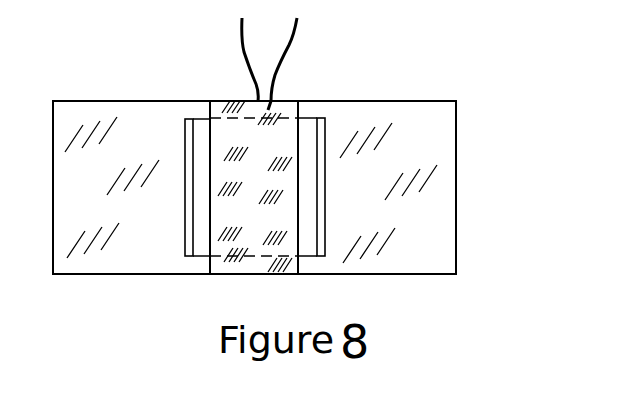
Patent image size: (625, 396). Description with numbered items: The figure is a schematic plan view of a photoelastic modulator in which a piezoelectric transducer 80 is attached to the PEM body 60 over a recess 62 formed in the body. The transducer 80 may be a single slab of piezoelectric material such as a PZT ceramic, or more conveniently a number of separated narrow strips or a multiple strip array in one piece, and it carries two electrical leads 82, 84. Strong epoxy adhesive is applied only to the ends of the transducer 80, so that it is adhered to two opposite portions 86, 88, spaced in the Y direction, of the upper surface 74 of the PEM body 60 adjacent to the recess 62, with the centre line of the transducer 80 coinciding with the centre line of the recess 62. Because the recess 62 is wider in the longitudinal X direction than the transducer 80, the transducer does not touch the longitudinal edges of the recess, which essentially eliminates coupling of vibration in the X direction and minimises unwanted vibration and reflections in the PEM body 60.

The PEM body 60 is at (457, 162).
The recess 62 is at (185, 135).
The upper surface 74 is at (412, 127).
The piezoelectric transducer 80 is at (230, 252).
The electrical lead 82 is at (242, 55).
The electrical lead 84 is at (291, 47).
The portion of upper surface 86 is at (303, 110).
The portion of upper surface 88 is at (300, 263).